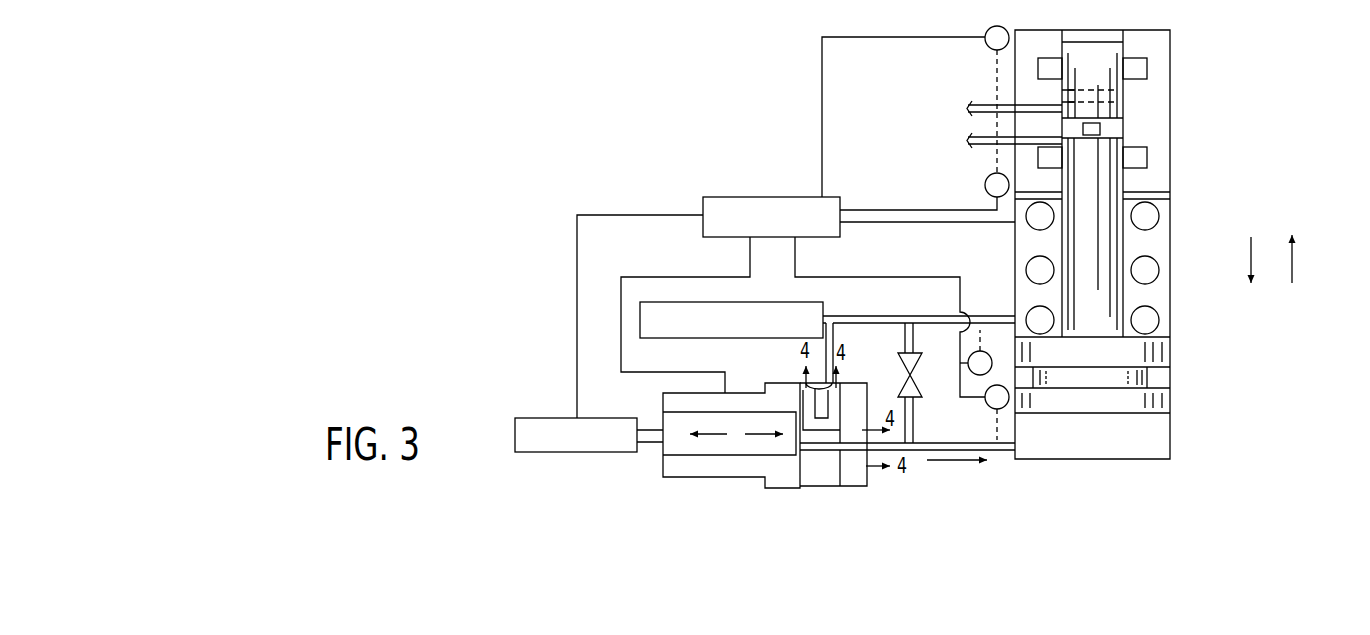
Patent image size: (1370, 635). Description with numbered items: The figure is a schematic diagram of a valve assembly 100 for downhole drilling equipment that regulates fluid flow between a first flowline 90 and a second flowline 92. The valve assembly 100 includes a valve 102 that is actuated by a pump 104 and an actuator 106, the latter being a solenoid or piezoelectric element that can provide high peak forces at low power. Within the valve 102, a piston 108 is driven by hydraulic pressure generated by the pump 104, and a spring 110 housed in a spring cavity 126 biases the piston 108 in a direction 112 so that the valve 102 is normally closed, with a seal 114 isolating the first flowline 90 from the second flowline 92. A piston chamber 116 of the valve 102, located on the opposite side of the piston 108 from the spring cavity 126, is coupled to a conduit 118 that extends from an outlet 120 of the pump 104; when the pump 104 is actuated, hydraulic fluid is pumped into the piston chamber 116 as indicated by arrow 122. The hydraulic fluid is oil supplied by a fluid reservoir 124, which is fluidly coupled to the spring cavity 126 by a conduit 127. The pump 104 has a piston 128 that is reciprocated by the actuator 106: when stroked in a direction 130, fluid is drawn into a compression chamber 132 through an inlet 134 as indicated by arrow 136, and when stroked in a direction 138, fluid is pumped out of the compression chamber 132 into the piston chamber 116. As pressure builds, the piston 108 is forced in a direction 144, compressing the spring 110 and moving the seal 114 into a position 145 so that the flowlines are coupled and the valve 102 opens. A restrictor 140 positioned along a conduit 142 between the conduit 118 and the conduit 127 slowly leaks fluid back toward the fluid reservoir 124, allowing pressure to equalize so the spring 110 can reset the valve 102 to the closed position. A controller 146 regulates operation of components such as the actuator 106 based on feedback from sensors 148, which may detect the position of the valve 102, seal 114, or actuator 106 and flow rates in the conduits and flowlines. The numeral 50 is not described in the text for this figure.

The tool body 50 is at (1079, 165).
The first flowline 90 is at (985, 103).
The second flowline 92 is at (985, 157).
The valve assembly 100 is at (661, 86).
The valve 102 is at (1168, 229).
The pump 104 is at (812, 427).
The actuator 106 is at (577, 452).
The piston 108 is at (1137, 355).
The spring 110 is at (1148, 219).
The direction 112 is at (1252, 258).
The seal 114 is at (1110, 132).
The piston chamber 116 is at (1152, 440).
The conduit 118 is at (975, 441).
The outlet 120 is at (874, 470).
The arrow 122 is at (950, 463).
The fluid reservoir 124 is at (735, 302).
The spring cavity 126 is at (1148, 246).
The conduit 127 is at (924, 317).
The piston 128 is at (677, 452).
The direction 130 is at (712, 437).
The compression chamber 132 is at (800, 403).
The inlet 134 is at (800, 364).
The arrow 136 is at (852, 368).
The direction 138 is at (762, 437).
The restrictor 140 is at (905, 352).
The conduit 142 is at (917, 417).
The direction 144 is at (1295, 262).
The position 145 is at (1120, 95).
The controller 146 is at (771, 197).
The sensors 148 is at (983, 27).